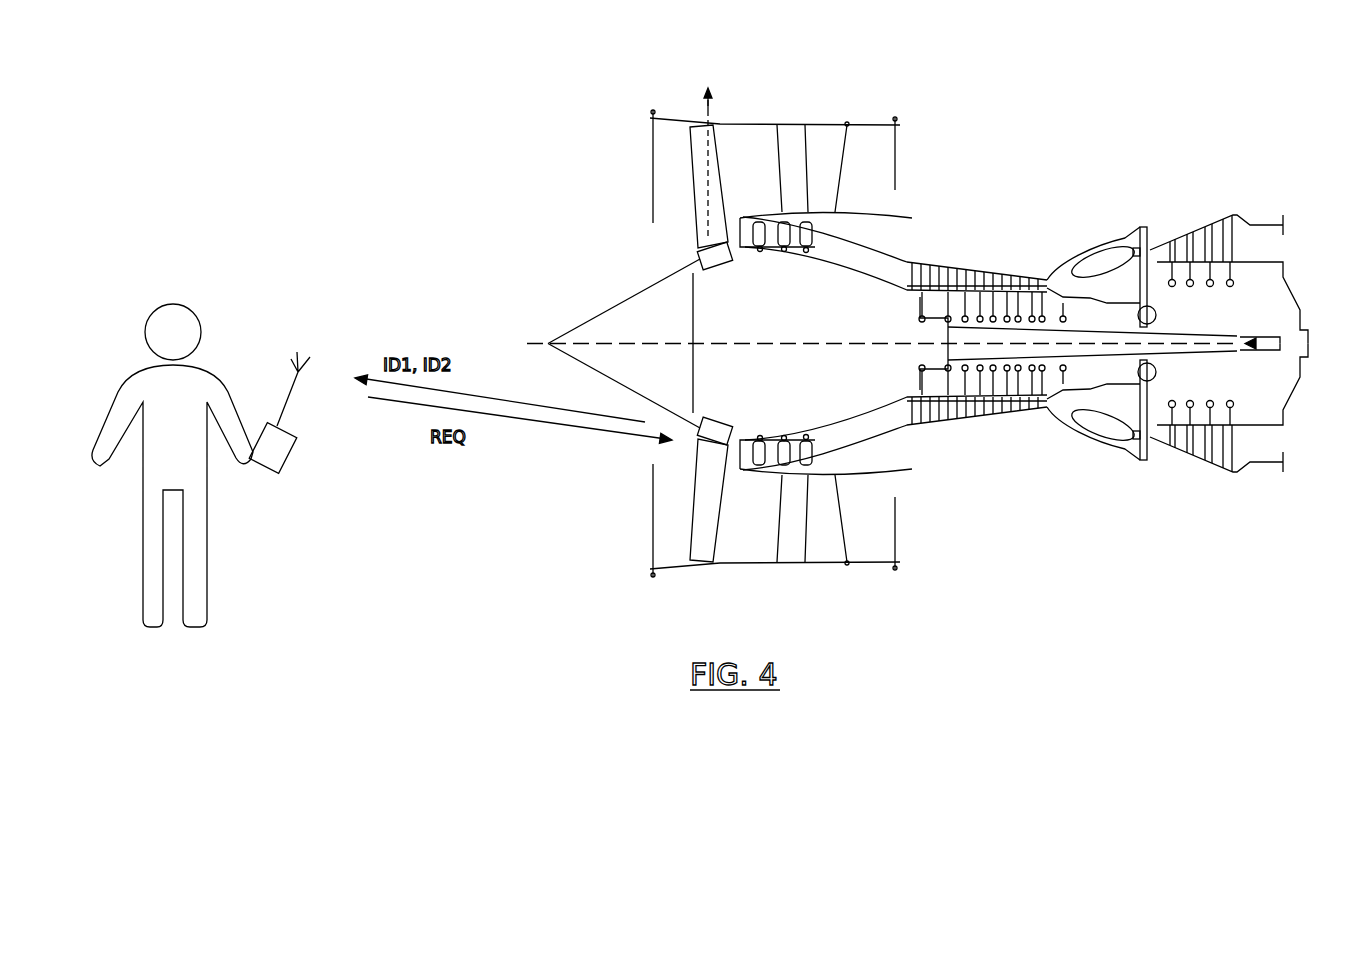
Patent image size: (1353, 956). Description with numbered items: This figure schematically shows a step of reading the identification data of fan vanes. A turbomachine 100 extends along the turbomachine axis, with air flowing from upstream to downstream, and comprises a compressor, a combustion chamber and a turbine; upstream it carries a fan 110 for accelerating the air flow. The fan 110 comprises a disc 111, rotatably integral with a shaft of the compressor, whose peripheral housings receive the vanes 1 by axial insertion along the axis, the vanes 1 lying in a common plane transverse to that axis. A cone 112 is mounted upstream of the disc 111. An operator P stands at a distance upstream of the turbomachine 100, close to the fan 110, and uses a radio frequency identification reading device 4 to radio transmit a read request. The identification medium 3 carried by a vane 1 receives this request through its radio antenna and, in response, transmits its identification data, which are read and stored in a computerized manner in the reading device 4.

The vane 1 is at (710, 167).
The identification medium 3 is at (722, 263).
The radio frequency identification reading device 4 is at (283, 458).
The turbomachine 100 is at (950, 167).
The fan 110 is at (640, 332).
The disc 111 is at (720, 307).
The cone 112 is at (635, 307).
The operator P is at (205, 318).